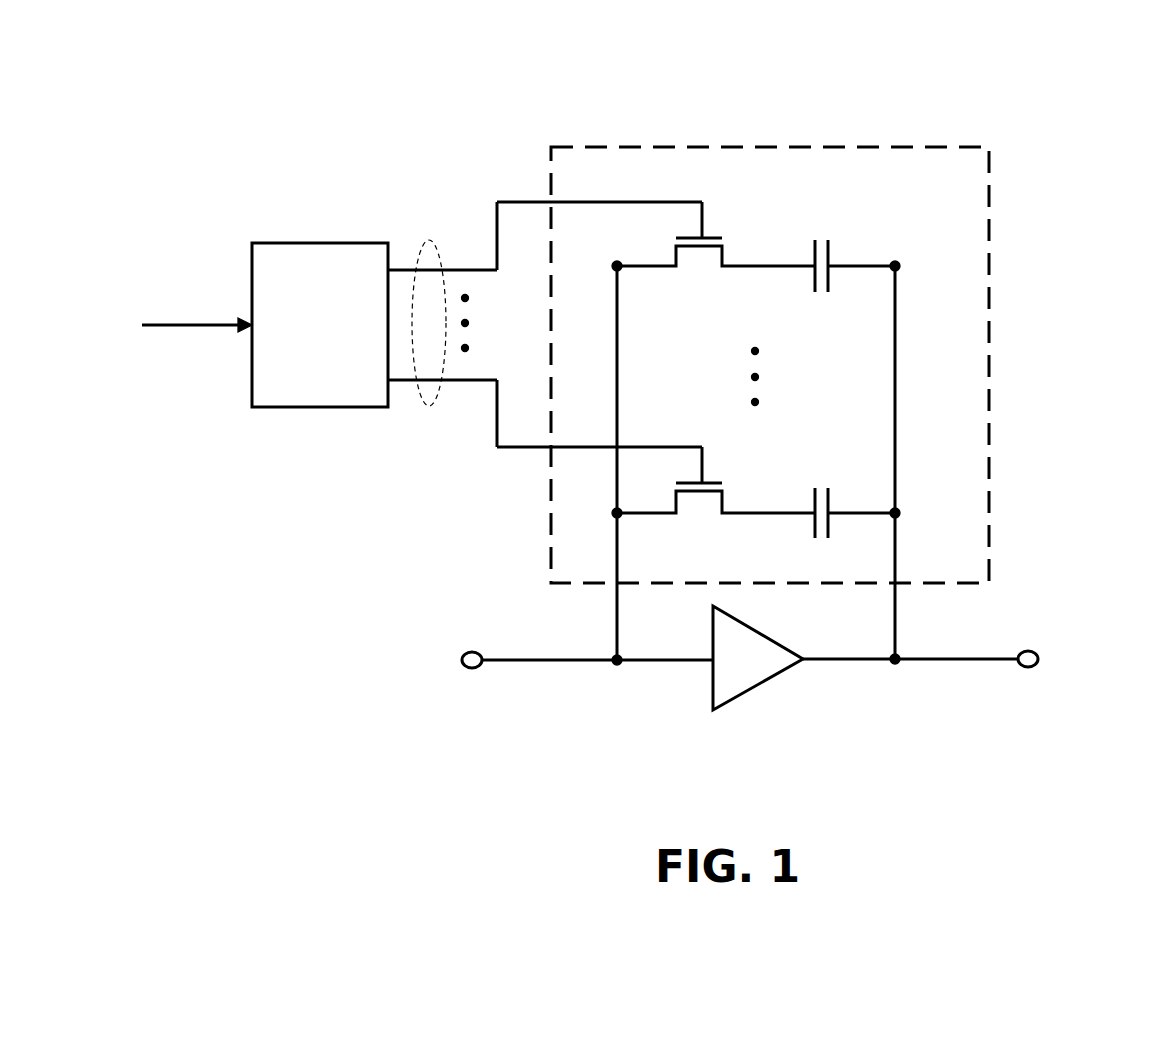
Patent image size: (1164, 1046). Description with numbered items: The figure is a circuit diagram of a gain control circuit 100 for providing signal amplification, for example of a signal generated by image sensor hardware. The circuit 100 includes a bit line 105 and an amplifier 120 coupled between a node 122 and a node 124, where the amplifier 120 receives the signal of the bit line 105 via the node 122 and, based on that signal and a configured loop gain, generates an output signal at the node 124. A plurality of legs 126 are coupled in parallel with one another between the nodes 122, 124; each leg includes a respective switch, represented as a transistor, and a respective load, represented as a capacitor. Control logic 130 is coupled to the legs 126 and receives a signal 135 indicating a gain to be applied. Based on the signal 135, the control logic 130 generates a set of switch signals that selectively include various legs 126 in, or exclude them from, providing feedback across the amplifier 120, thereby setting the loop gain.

The circuit 100 is at (306, 116).
The bit line 105 is at (516, 678).
The amplifier 120 is at (914, 784).
The node 122 is at (617, 678).
The node 124 is at (894, 678).
The plurality of legs 126 is at (989, 202).
The control logic 130 is at (333, 360).
The signal 135 is at (201, 316).